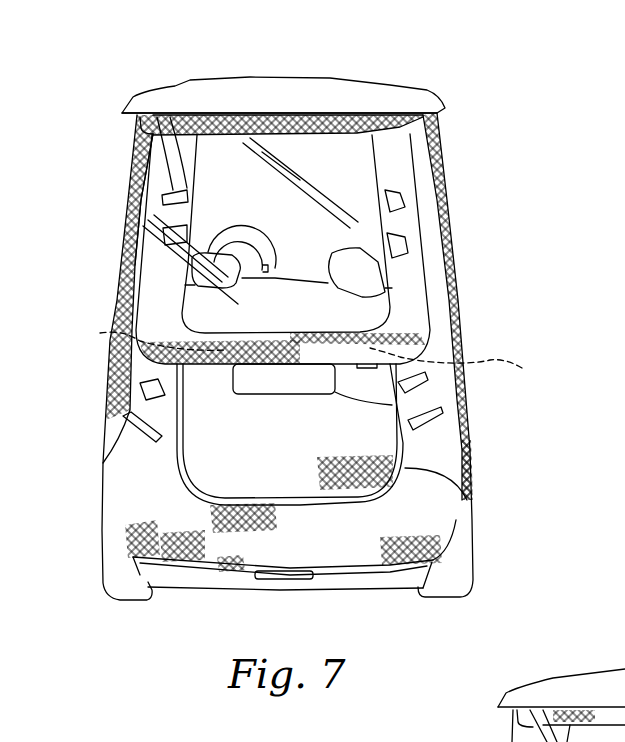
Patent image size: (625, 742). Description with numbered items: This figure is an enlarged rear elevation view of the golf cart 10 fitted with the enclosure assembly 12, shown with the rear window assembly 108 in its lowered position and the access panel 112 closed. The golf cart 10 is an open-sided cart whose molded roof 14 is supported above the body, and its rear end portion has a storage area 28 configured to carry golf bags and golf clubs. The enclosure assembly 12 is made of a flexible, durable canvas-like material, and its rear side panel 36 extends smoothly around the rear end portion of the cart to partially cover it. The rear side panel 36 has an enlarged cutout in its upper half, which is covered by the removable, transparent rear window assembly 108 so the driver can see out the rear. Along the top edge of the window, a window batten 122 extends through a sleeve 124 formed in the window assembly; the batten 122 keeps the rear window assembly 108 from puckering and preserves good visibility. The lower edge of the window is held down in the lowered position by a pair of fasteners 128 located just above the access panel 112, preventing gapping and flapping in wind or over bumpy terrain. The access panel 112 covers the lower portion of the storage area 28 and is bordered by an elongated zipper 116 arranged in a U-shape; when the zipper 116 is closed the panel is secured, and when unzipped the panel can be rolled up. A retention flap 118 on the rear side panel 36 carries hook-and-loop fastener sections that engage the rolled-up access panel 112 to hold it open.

The golf cart 10 is at (463, 135).
The enclosure assembly 12 is at (441, 334).
The molded roof 14 is at (263, 81).
The storage area 28 is at (245, 478).
The rear side panel 36 is at (458, 493).
The rear window assembly 108 is at (157, 264).
The access panel 112 is at (202, 420).
The zipper 116 is at (187, 478).
The retention flap 118 is at (435, 390).
The window batten 122 is at (270, 132).
The sleeve 124 is at (313, 132).
The fasteners 128 is at (312, 353).